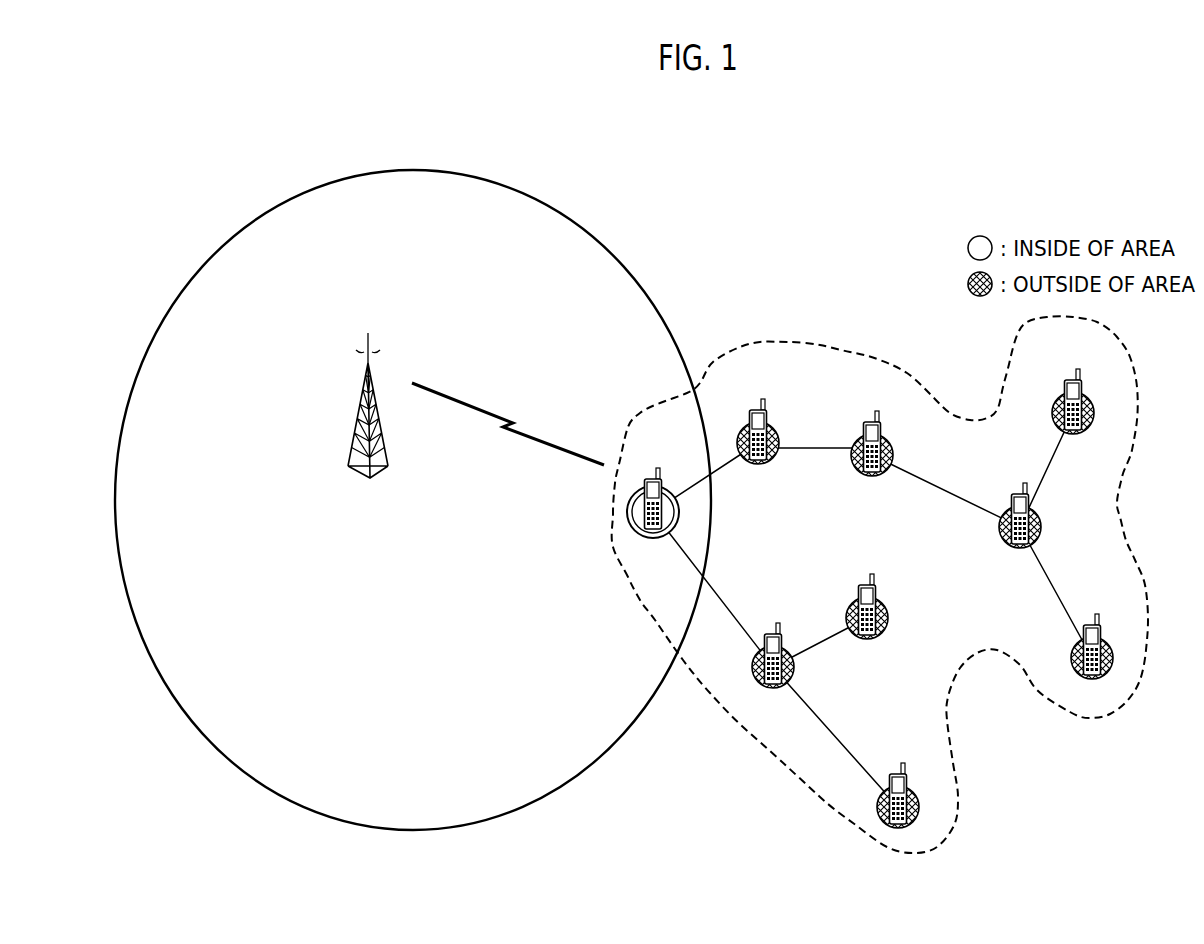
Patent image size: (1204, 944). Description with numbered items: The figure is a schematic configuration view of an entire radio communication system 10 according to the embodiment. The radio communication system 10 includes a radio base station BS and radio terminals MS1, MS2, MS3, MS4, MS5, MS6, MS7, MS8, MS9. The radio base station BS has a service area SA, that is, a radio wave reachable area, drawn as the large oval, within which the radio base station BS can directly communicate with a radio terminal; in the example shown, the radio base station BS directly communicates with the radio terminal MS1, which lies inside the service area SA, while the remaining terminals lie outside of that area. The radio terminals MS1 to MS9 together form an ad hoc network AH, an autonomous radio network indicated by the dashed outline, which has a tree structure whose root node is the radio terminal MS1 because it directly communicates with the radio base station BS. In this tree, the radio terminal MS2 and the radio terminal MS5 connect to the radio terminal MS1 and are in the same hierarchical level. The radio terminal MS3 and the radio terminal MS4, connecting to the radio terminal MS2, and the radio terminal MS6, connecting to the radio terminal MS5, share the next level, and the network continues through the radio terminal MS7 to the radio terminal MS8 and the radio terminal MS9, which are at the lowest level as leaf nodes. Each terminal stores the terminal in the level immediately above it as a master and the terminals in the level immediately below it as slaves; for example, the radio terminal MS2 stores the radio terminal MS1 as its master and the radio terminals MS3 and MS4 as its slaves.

The radio communication system 10 is at (727, 183).
The service area SA is at (585, 231).
The radio base station BS is at (389, 441).
The ad hoc network AH is at (1124, 513).
The radio terminal MS1 is at (654, 488).
The radio terminal MS2 is at (766, 637).
The radio terminal MS3 is at (858, 591).
The radio terminal MS4 is at (890, 778).
The radio terminal MS5 is at (757, 412).
The radio terminal MS6 is at (864, 427).
The radio terminal MS7 is at (1014, 498).
The radio terminal MS8 is at (1089, 620).
The radio terminal MS9 is at (1070, 382).